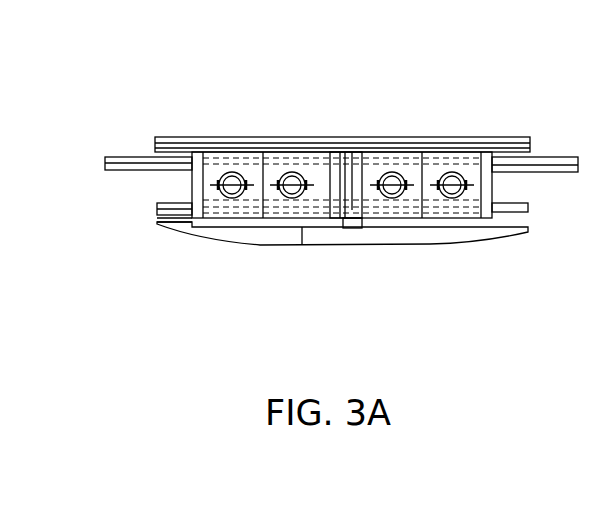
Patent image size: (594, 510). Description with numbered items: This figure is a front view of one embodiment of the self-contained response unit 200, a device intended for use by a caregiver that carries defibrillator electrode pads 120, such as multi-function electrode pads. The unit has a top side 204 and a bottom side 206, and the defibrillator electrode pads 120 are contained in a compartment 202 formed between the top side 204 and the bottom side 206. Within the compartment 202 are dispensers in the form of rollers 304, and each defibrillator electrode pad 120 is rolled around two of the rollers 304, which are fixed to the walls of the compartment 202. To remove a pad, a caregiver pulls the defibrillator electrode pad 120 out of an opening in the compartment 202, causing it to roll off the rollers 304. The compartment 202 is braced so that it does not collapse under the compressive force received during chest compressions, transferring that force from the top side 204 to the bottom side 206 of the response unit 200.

The self-contained response unit 200 is at (250, 73).
The top side 204 is at (400, 133).
The defibrillator electrode pads 120 is at (110, 171).
The compartment 202 is at (158, 182).
The bottom side 206 is at (488, 233).
The rollers 304 is at (280, 187).